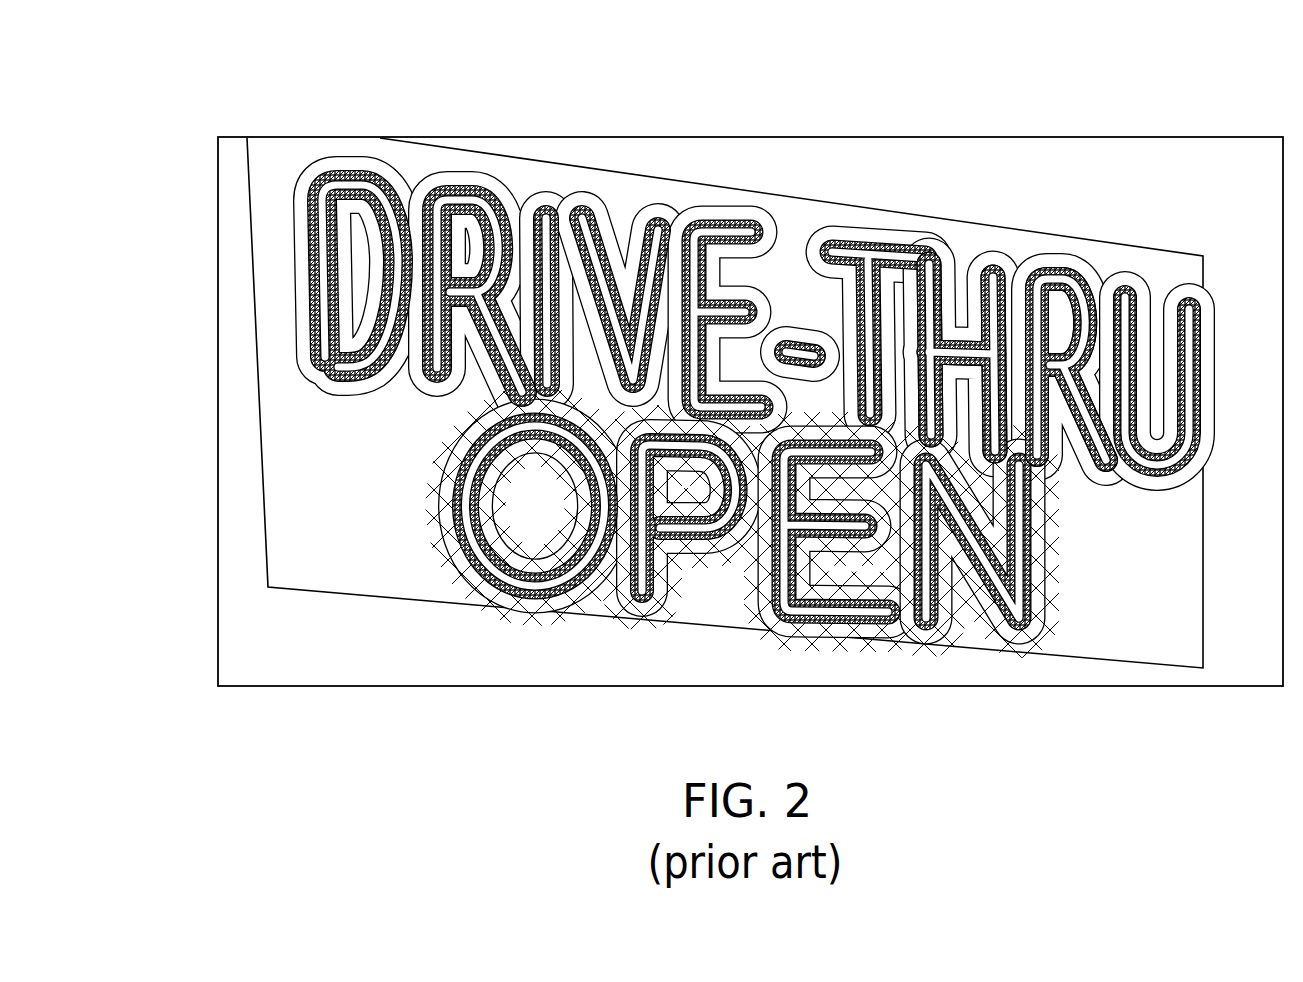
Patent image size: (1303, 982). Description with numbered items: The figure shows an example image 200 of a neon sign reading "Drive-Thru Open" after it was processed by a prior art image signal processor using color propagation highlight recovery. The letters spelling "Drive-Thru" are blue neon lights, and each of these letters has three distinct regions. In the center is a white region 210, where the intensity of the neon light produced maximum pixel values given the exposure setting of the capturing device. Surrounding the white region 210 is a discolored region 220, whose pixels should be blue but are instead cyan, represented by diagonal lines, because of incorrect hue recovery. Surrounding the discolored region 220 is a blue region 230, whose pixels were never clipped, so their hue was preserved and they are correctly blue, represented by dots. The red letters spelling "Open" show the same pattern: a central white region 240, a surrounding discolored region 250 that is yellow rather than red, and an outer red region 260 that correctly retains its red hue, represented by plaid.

The image 200 is at (703, 447).
The white region 210 is at (867, 247).
The discolored region 220 is at (997, 262).
The blue region 230 is at (1107, 283).
The white region 240 is at (465, 515).
The discolored region 250 is at (482, 572).
The red region 260 is at (525, 613).